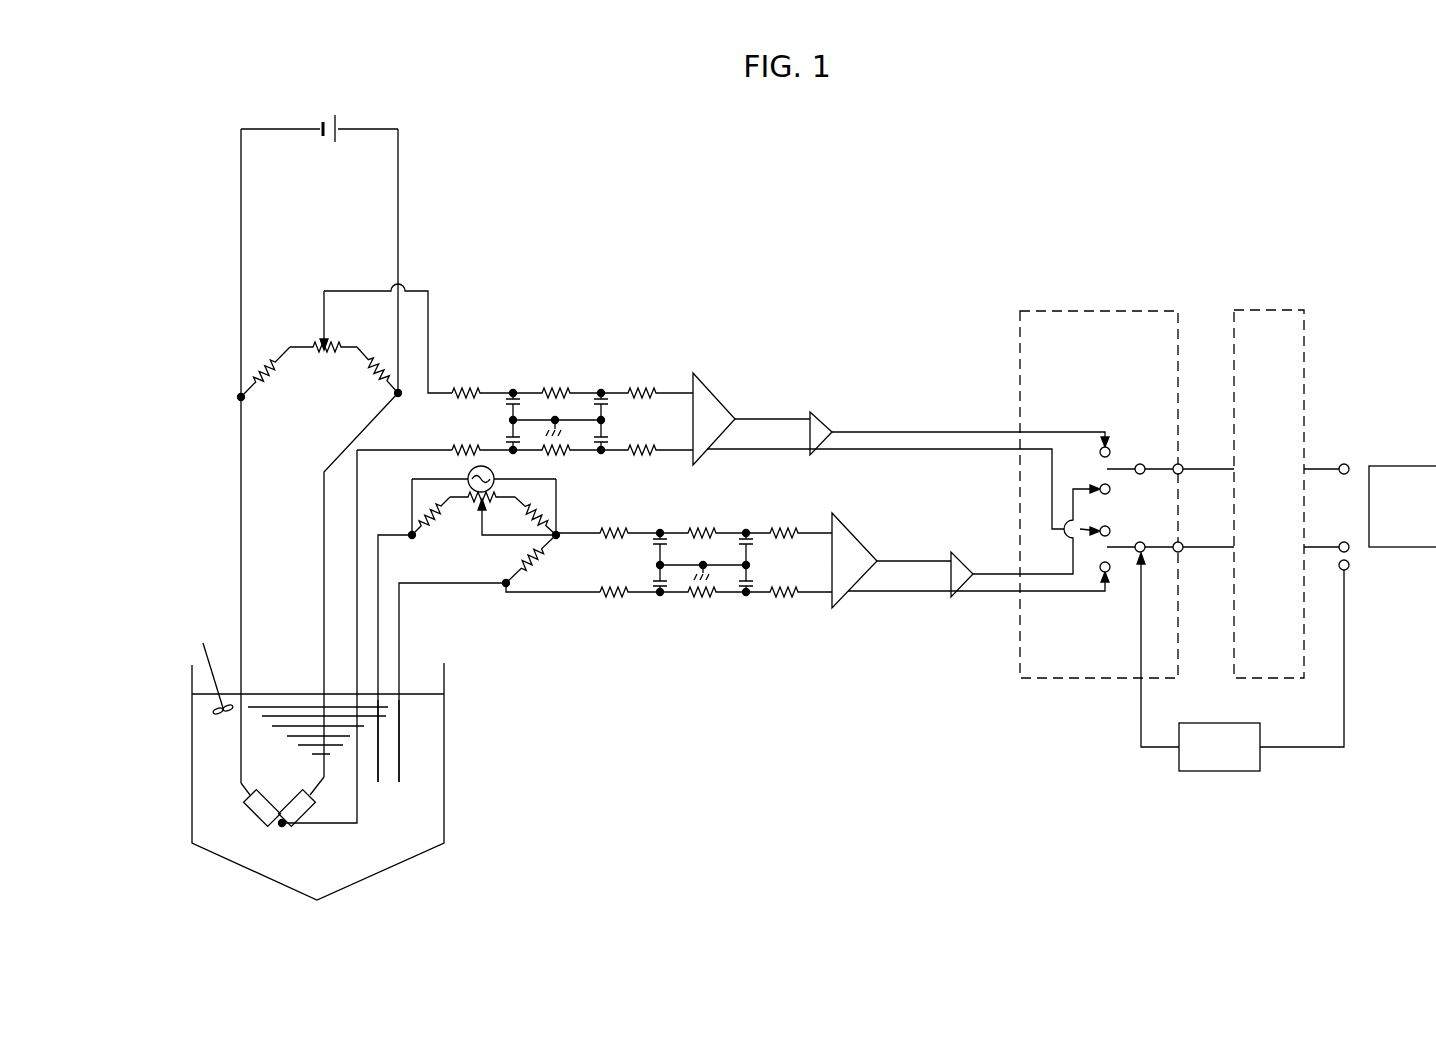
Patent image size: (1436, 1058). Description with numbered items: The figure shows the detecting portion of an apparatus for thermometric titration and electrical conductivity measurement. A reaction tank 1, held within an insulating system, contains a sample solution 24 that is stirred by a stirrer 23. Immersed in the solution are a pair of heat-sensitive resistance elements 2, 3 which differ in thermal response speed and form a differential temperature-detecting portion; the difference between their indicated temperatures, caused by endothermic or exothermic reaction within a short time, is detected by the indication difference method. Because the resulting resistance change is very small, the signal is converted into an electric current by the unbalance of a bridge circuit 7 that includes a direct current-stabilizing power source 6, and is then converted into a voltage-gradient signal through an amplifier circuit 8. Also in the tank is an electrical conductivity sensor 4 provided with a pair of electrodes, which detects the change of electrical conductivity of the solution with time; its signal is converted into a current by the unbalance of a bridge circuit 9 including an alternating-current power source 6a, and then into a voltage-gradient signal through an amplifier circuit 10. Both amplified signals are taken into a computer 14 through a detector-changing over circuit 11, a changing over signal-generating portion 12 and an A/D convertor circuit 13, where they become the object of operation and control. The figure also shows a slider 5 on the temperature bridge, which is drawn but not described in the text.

The reaction tank 1 is at (293, 875).
The heat-sensitive resistance element 2 is at (264, 816).
The heat-sensitive resistance element 3 is at (282, 779).
The electrical conductivity sensor 4 is at (400, 754).
The potentiometer 5 is at (322, 345).
The direct current-stabilizing power source 6 is at (322, 127).
The alternating-current power source 6a is at (468, 477).
The bridge circuit 7 is at (314, 364).
The amplifier circuit 8 is at (710, 402).
The bridge circuit 9 is at (462, 507).
The amplifier circuit 10 is at (845, 540).
The detector-changing over circuit 11 is at (1104, 323).
The changing over signal-generating portion 12 is at (1219, 747).
The A/D convertor circuit 13 is at (1279, 323).
The computer 14 is at (1402, 506).
The stirrer 23 is at (212, 718).
The sample solution 24 is at (289, 694).